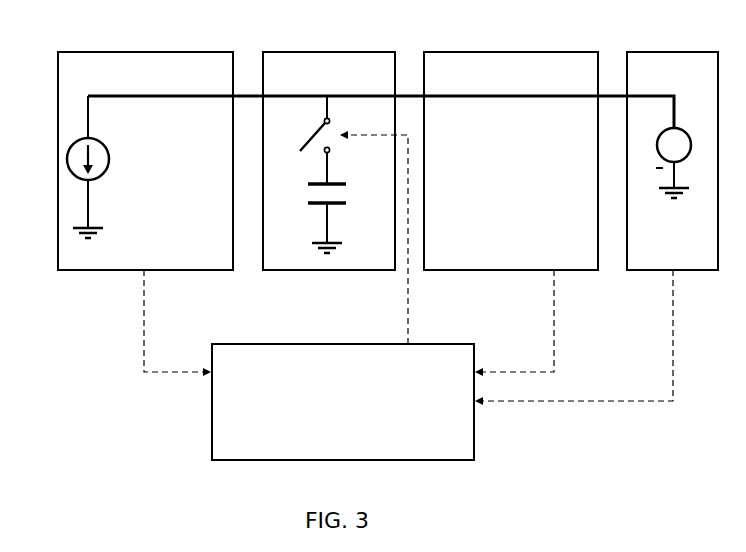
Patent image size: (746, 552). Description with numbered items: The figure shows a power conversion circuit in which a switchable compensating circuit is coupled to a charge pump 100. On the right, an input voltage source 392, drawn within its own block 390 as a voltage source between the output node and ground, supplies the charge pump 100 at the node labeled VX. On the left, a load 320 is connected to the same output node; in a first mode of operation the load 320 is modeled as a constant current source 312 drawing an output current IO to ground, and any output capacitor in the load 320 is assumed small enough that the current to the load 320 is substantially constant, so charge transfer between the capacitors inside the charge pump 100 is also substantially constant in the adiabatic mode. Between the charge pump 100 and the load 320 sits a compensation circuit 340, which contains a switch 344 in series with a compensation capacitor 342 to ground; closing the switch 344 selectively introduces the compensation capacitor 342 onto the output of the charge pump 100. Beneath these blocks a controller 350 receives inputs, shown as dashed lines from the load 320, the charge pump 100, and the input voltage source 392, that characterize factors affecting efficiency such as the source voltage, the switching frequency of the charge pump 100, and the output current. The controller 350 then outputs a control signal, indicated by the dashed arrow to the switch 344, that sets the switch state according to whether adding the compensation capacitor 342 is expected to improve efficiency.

The charge pump 100 is at (498, 194).
The constant current source 312 is at (77, 133).
The load 320 is at (102, 271).
The compensation circuit 340 is at (297, 271).
The compensation capacitor 342 is at (338, 212).
The switch 344 is at (316, 130).
The controller 350 is at (330, 434).
The input voltage source block 390 is at (653, 271).
The input voltage source 392 is at (687, 123).